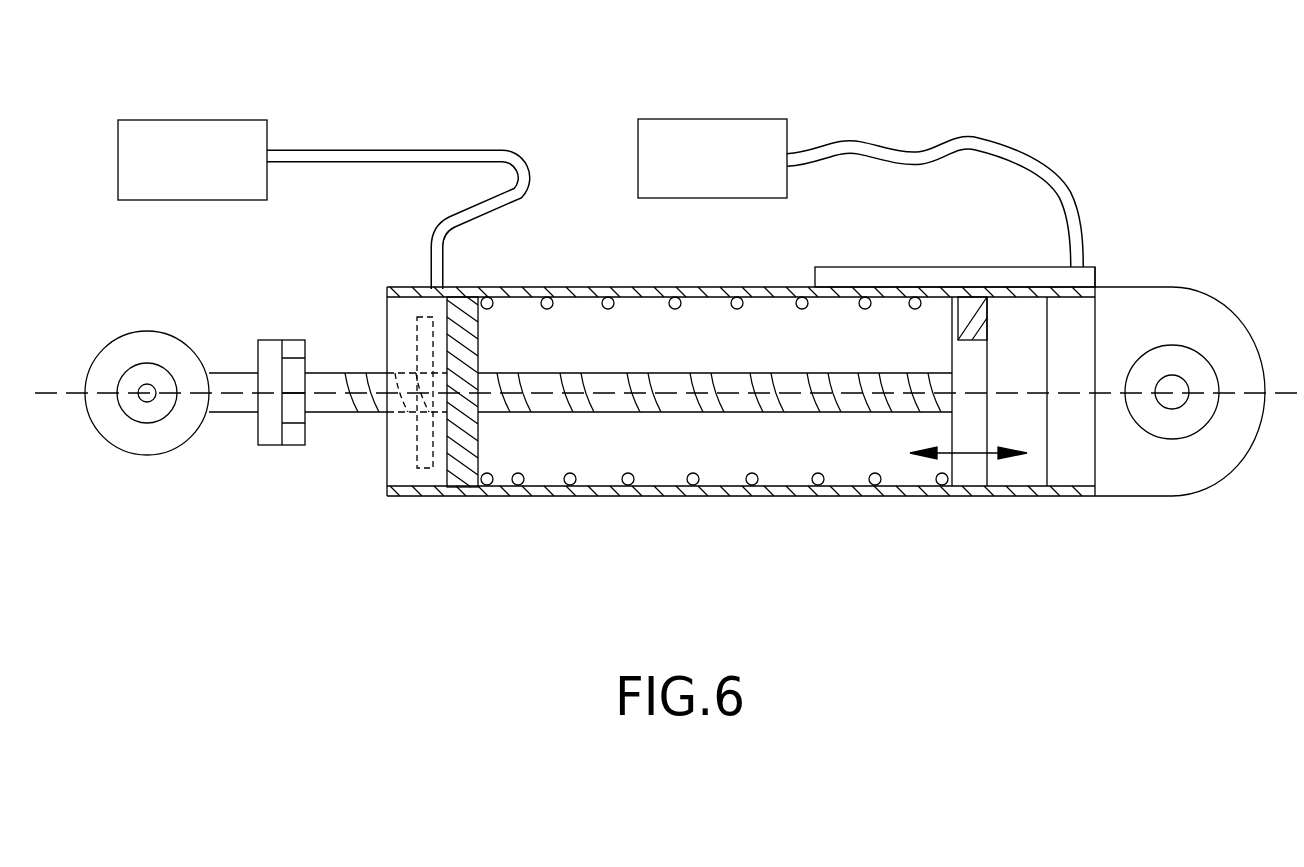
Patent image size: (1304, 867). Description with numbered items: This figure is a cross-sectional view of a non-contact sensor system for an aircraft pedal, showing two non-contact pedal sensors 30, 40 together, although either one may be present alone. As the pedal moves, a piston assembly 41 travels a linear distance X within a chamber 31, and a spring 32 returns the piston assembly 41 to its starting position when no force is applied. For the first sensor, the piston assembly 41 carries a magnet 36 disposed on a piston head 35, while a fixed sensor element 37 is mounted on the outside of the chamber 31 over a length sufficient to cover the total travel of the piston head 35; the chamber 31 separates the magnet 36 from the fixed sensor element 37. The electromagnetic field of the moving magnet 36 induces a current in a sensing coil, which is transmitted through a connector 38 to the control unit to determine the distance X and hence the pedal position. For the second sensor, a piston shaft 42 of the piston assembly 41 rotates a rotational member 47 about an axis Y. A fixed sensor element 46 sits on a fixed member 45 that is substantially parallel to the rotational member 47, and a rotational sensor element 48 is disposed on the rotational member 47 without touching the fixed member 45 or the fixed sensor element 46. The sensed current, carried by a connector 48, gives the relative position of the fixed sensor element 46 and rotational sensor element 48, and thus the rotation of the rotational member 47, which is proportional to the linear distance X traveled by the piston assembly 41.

The non-contact pedal sensor 30 is at (932, 240).
The chamber 31 is at (592, 455).
The spring 32 is at (693, 480).
The piston head 35 is at (968, 467).
The magnet 36 is at (980, 320).
The fixed sensor element 37 is at (1033, 273).
The connector 38 is at (713, 128).
The non-contact pedal sensor 40 is at (556, 118).
The piston assembly 41 is at (932, 420).
The piston shaft 42 is at (566, 356).
The fixed member 45 is at (468, 288).
The fixed sensor element 46 is at (437, 317).
The rotational member 47 is at (423, 343).
The rotational sensor element 48 is at (205, 127).
The distance X is at (982, 455).
The axis Y is at (62, 394).